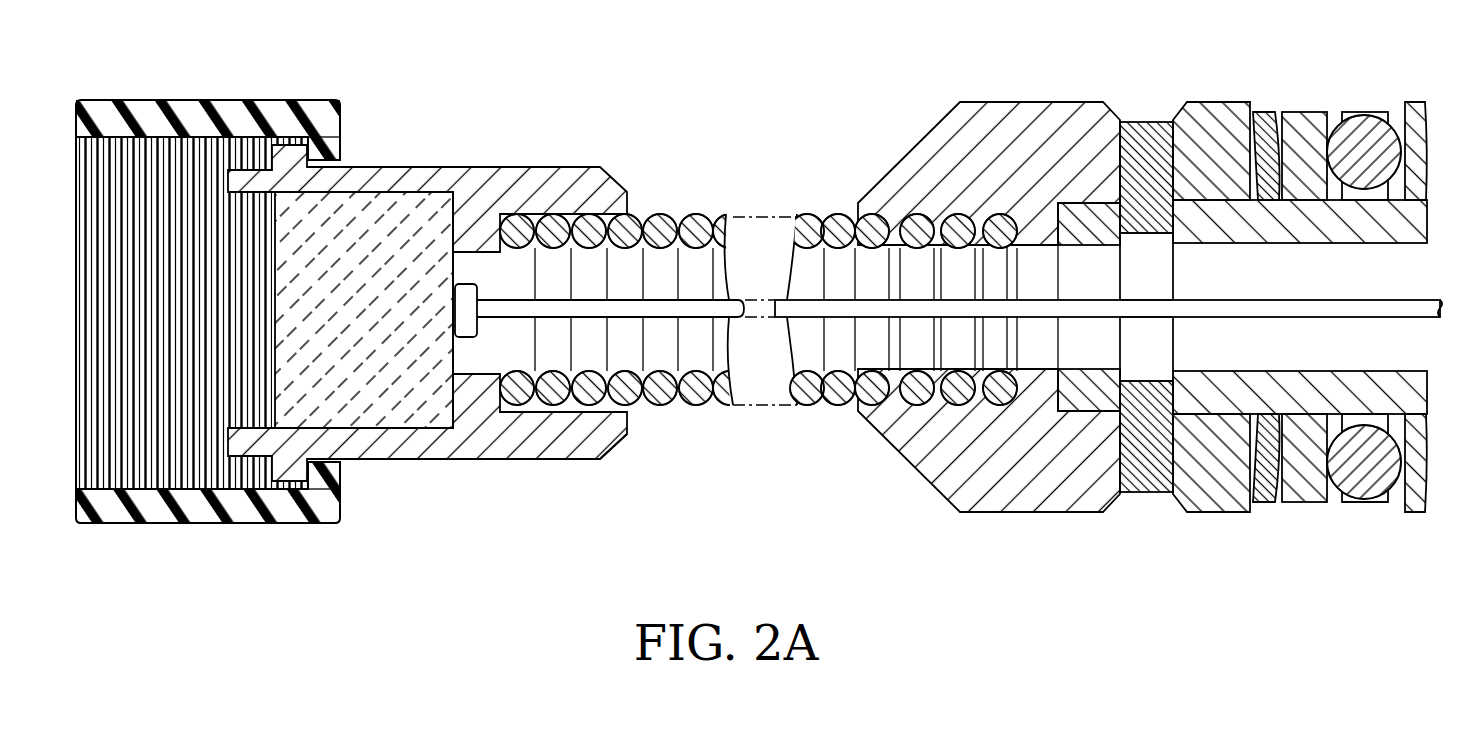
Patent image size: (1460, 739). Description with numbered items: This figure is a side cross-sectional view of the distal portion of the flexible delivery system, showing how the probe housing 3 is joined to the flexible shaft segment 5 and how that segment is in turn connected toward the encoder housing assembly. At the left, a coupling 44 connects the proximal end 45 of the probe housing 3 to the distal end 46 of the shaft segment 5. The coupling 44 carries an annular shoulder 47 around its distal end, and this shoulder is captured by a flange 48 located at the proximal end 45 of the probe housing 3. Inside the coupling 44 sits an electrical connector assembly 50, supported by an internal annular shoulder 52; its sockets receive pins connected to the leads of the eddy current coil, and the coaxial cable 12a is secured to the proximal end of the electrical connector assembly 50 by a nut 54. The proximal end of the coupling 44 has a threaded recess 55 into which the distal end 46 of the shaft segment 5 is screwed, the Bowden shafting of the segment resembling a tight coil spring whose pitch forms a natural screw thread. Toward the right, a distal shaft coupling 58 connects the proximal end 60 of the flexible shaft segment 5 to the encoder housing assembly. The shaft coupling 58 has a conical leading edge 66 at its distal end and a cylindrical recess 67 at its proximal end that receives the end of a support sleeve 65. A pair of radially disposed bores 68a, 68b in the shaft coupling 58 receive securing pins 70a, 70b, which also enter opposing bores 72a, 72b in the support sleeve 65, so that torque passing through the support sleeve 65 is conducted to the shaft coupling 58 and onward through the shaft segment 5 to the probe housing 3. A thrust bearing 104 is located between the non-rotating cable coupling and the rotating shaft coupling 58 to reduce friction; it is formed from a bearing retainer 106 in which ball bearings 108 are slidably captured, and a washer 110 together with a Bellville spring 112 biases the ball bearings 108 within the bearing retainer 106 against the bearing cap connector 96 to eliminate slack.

The probe housing 3 is at (104, 92).
The flexible shaft segment 5 is at (663, 214).
The coaxial cable 12a is at (625, 300).
The coupling 44 is at (437, 185).
The proximal end of the probe housing 45 is at (262, 100).
The distal end of the shaft segment 46 is at (553, 225).
The annular shoulder 47 is at (342, 150).
The flange 48 is at (343, 520).
The electrical connector assembly 50 is at (266, 272).
The internal annular shoulder 52 is at (483, 372).
The nut 54 is at (480, 300).
The threaded recess 55 is at (538, 412).
The distal shaft coupling 58 is at (1023, 470).
The proximal end of the flexible shaft segment 60 is at (920, 392).
The support sleeve 65 is at (1297, 235).
The conical leading edge 66 is at (920, 147).
The cylindrical recess 67 is at (1100, 412).
The radially disposed bore 68a is at (1203, 135).
The radially disposed bore 68b is at (1183, 500).
The securing pin 70a is at (1147, 135).
The securing pin 70b is at (1145, 472).
The bore 72a is at (1125, 243).
The bore 72b is at (1165, 372).
The bearing cap connector 96 is at (1412, 100).
The thrust bearing 104 is at (1376, 530).
The bearing retainer 106 is at (1372, 118).
The ball bearings 108 is at (1352, 452).
The washer 110 is at (1300, 130).
The Bellville spring 112 is at (1265, 505).